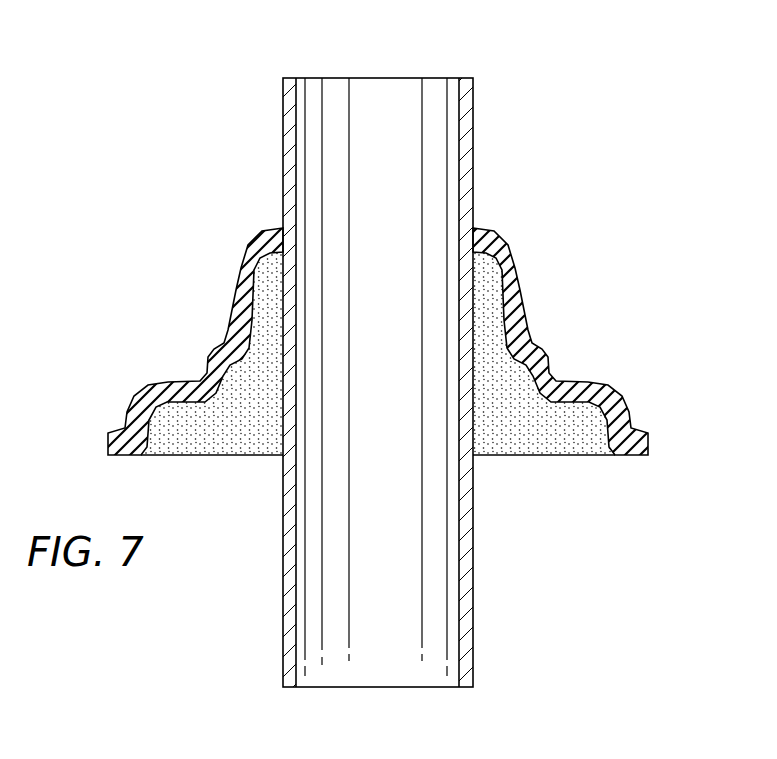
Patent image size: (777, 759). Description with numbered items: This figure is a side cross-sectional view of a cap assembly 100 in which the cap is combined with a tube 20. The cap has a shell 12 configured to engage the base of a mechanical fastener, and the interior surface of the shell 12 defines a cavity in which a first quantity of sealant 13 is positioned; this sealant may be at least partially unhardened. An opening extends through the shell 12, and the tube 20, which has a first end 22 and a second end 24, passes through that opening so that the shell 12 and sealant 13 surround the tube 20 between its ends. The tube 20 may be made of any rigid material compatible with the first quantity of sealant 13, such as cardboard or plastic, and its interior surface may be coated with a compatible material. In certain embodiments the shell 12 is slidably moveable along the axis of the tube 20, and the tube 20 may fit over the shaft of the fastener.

The cap assembly 100 is at (608, 208).
The shell 12 is at (580, 387).
The first quantity of sealant 13 is at (238, 440).
The tube 20 is at (432, 155).
The first end 22 is at (385, 108).
The second end 24 is at (380, 662).